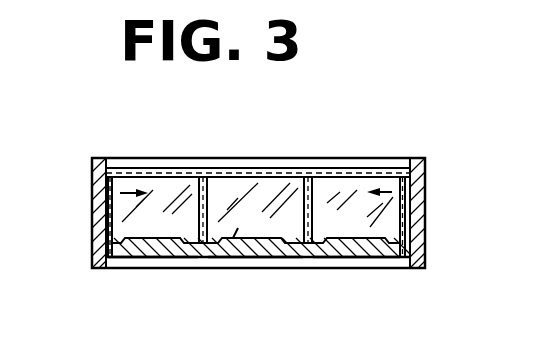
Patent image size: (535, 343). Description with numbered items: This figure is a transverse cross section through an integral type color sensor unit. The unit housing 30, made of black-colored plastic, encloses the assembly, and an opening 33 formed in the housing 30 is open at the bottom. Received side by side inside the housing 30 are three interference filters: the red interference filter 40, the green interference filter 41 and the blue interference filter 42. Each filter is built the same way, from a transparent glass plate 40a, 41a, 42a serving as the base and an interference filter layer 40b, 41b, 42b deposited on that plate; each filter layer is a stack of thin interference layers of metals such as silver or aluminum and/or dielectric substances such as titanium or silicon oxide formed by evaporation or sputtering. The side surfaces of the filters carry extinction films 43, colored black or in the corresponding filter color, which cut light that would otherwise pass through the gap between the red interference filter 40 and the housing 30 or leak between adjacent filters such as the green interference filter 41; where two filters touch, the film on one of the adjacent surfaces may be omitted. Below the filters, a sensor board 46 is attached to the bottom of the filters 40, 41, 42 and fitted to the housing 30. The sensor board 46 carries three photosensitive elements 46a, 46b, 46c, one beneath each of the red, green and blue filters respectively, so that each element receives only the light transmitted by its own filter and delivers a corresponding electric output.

The unit housing 30 is at (92, 170).
The opening 33 is at (403, 166).
The red interference filter 40 is at (110, 199).
The glass plate 40a is at (113, 226).
The interference filter layer 40b is at (144, 170).
The green interference filter 41 is at (221, 190).
The glass plate 41a is at (240, 232).
The interference filter layer 41b is at (266, 170).
The blue interference filter 42 is at (400, 194).
The glass plate 42a is at (393, 228).
The interference filter layer 42b is at (358, 171).
The extinction film 43 is at (298, 175).
The sensor board 46 is at (333, 266).
The photosensitive element 46a is at (143, 258).
The photosensitive element 46b is at (279, 257).
The photosensitive element 46c is at (384, 268).